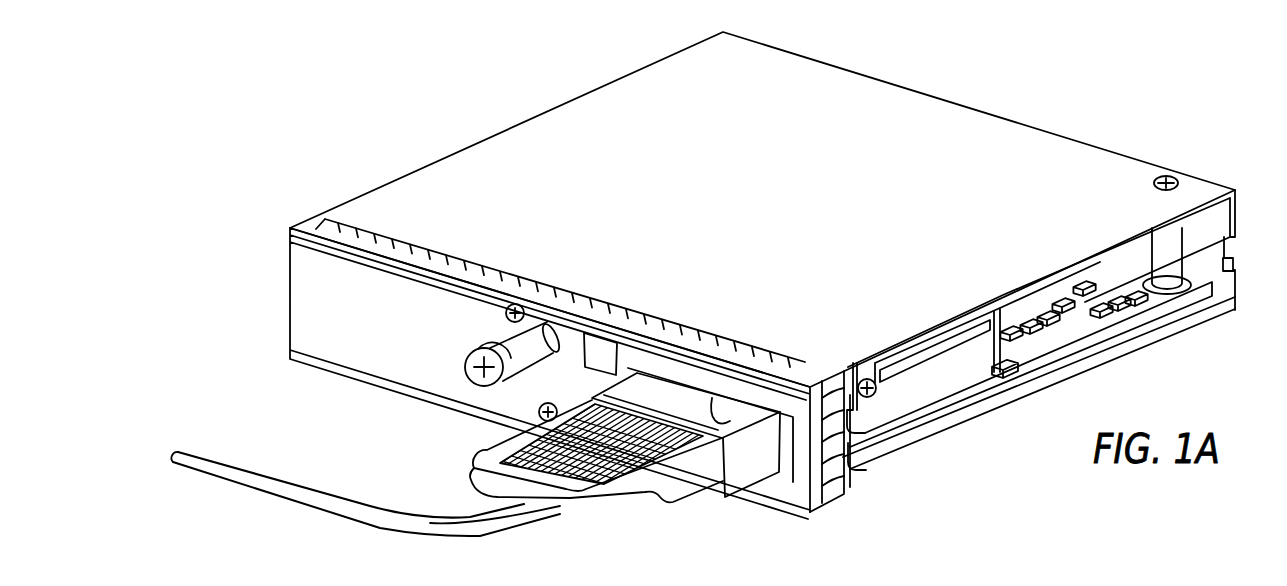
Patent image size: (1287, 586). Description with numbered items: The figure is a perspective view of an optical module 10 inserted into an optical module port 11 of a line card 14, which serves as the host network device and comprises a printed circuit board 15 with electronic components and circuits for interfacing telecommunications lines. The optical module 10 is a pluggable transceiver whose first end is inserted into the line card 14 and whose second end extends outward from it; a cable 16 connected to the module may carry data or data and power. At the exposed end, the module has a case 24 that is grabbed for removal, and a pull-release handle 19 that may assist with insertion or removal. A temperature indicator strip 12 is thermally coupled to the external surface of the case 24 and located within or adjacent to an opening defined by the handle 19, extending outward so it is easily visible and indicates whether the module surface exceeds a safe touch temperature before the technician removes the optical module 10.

The optical module 10 is at (745, 472).
The optical module port 11 is at (722, 405).
The temperature indicator strip 12 is at (515, 440).
The line card 14 is at (927, 125).
The printed circuit board 15 is at (1068, 332).
The cable 16 is at (218, 473).
The pull-release handle 19 is at (583, 503).
The case 24 is at (637, 393).